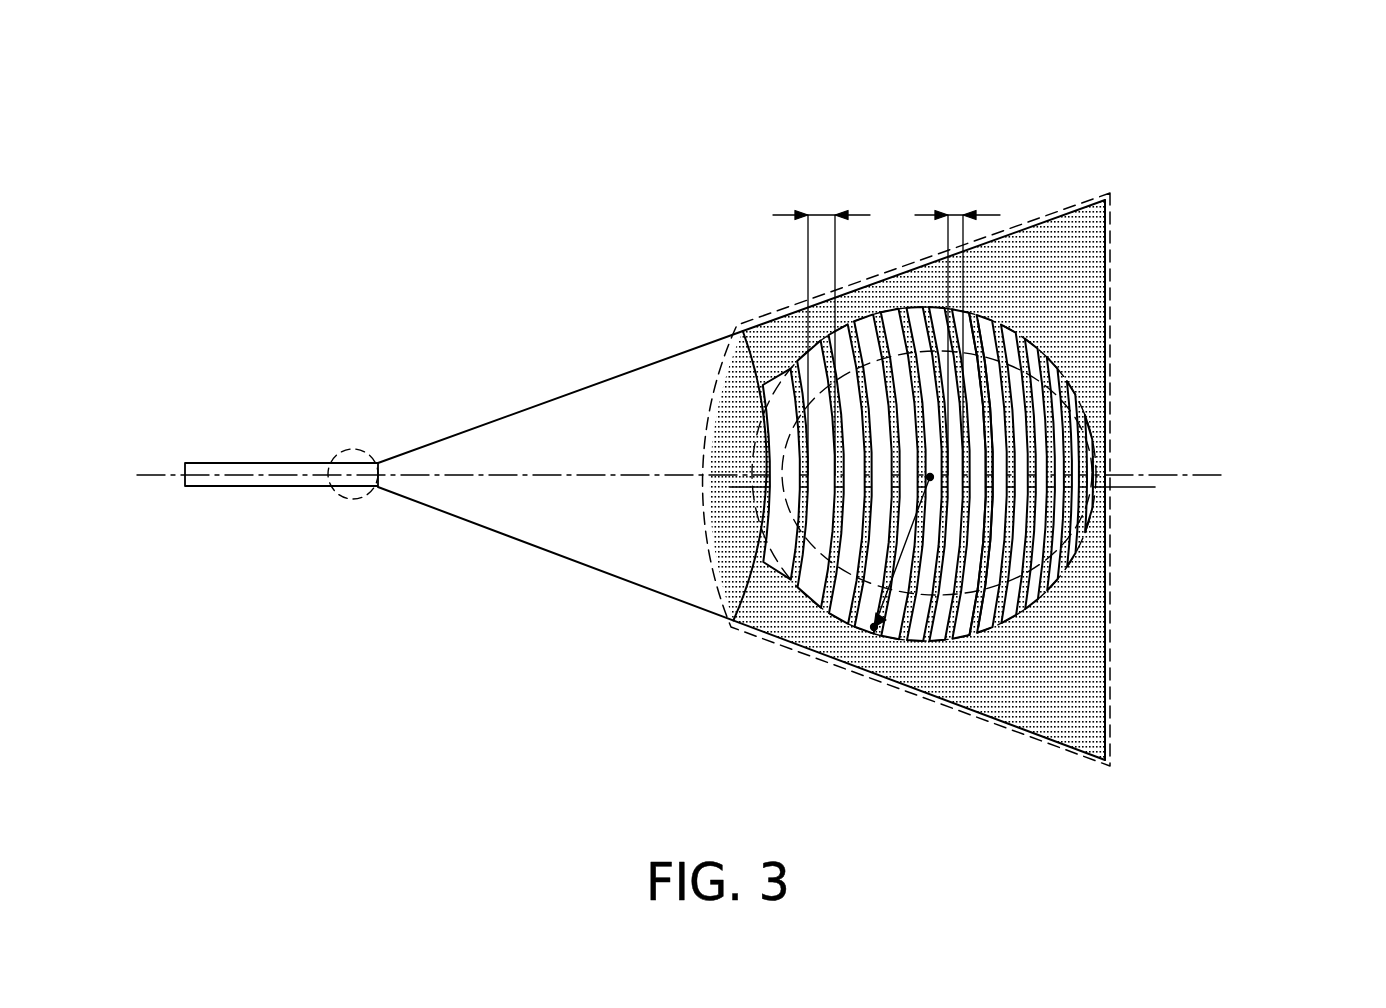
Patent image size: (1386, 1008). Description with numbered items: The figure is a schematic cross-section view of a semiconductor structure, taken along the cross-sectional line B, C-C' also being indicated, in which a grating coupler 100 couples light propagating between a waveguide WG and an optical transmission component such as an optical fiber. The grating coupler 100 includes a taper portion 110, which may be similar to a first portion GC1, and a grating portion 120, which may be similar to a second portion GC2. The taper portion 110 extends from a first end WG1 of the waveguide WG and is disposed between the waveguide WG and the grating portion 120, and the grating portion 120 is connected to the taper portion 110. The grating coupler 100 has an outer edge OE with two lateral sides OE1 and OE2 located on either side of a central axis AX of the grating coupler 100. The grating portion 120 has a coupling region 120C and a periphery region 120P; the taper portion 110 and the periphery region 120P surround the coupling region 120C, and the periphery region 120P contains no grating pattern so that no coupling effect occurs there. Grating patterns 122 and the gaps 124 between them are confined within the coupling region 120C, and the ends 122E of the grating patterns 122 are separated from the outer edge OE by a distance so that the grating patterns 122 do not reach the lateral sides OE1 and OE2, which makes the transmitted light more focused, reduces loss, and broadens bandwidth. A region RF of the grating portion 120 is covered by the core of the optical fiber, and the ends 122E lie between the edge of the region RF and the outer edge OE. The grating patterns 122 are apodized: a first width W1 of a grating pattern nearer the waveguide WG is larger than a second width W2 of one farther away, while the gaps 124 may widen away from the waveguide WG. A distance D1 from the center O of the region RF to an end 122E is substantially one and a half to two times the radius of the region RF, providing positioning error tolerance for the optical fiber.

The grating coupler 100 is at (917, 97).
The taper portion 110 is at (859, 421).
The first portion GC1 is at (859, 421).
The grating portion 120 is at (1029, 453).
The second portion GC2 is at (975, 482).
The coupling region 120C is at (1095, 600).
The periphery region 120P is at (1110, 552).
The grating patterns 122 is at (928, 531).
The ends of the grating patterns 122E is at (872, 630).
The gaps 124 is at (984, 605).
The outer edge OE is at (859, 421).
The first lateral side OE1 is at (1062, 214).
The second lateral side OE2 is at (1060, 742).
The first end of the waveguide WG1 is at (304, 429).
The waveguide WG is at (370, 450).
The central axis AX is at (158, 474).
The region covered by the core of the optical fiber RF is at (1045, 394).
The center of the region covered by the core of the optical fiber O is at (932, 462).
The distance D1 is at (907, 547).
The first width W1 is at (821, 325).
The second width W2 is at (957, 325).
The cross-sectional line B-B' B is at (685, 501).
The section line C-C' C is at (938, 507).